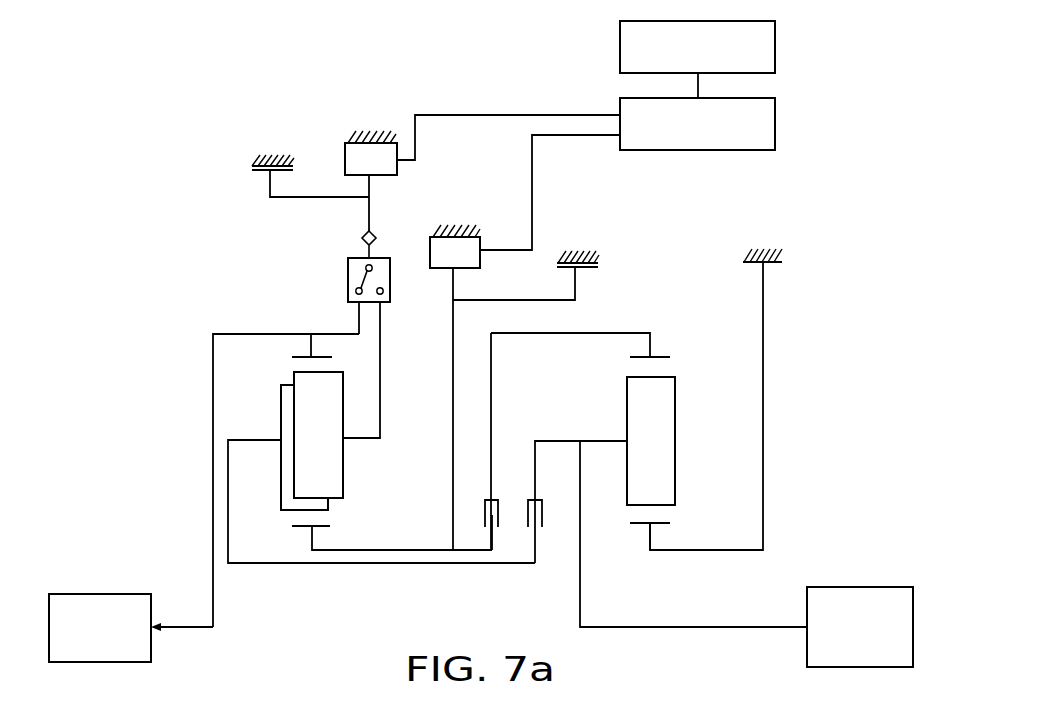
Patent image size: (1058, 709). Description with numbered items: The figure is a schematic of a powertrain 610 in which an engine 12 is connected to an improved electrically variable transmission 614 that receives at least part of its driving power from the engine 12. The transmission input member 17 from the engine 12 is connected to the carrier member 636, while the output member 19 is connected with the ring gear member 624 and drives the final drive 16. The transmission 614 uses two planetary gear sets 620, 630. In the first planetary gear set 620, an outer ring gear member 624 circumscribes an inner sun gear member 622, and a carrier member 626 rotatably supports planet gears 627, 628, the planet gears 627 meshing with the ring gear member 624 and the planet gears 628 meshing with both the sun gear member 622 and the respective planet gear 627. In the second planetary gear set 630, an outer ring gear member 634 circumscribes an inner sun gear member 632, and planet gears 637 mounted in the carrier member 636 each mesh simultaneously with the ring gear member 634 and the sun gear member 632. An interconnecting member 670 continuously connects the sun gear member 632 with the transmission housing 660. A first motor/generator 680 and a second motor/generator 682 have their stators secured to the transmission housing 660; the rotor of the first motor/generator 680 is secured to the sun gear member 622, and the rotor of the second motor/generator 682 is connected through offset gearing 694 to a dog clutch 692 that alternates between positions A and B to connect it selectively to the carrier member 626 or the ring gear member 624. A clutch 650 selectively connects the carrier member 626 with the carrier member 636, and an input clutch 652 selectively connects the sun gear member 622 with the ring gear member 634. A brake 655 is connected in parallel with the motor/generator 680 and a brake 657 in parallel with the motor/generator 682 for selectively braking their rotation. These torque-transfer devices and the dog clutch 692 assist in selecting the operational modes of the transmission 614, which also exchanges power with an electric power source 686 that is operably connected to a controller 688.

The engine 12 is at (842, 565).
The final drive 16 is at (113, 575).
The transmission input member 17 is at (765, 628).
The output member 19 is at (192, 628).
The powertrain 610 is at (150, 385).
The electrically variable transmission 614 is at (675, 268).
The planetary gear set 620 is at (298, 535).
The sun gear member 622 is at (318, 530).
The outer ring gear member 624 is at (307, 355).
The carrier member 626 is at (269, 432).
The planet gears 627 is at (303, 428).
The planet gears 628 is at (280, 498).
The planetary gear set 630 is at (638, 535).
The sun gear member 632 is at (662, 528).
The outer ring gear member 634 is at (643, 355).
The carrier member 636 is at (618, 434).
The planet gears 637 is at (636, 428).
The clutch 650 is at (525, 533).
The input clutch 652 is at (480, 533).
The brake 655 is at (610, 259).
The brake 657 is at (243, 162).
The transmission housing 660 is at (253, 157).
The interconnecting member 670 is at (763, 363).
The first motor/generator 680 is at (490, 229).
The second motor/generator 682 is at (334, 139).
The electric power source 686 is at (777, 51).
The controller 688 is at (777, 125).
The dog clutch 692 is at (347, 283).
The offset gearing 694 is at (352, 238).